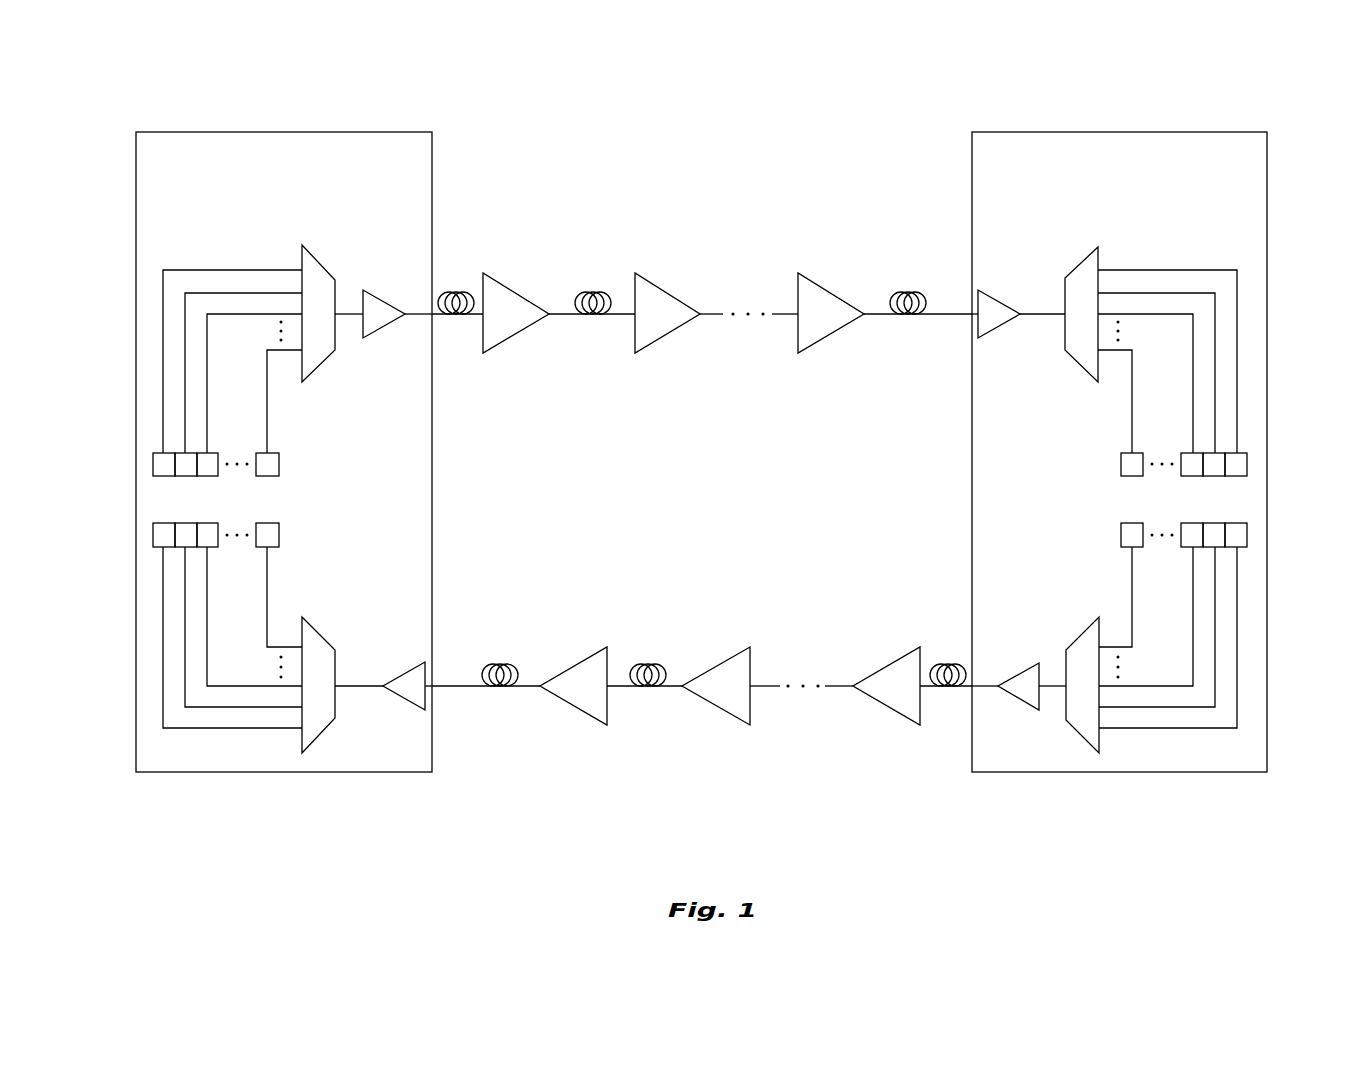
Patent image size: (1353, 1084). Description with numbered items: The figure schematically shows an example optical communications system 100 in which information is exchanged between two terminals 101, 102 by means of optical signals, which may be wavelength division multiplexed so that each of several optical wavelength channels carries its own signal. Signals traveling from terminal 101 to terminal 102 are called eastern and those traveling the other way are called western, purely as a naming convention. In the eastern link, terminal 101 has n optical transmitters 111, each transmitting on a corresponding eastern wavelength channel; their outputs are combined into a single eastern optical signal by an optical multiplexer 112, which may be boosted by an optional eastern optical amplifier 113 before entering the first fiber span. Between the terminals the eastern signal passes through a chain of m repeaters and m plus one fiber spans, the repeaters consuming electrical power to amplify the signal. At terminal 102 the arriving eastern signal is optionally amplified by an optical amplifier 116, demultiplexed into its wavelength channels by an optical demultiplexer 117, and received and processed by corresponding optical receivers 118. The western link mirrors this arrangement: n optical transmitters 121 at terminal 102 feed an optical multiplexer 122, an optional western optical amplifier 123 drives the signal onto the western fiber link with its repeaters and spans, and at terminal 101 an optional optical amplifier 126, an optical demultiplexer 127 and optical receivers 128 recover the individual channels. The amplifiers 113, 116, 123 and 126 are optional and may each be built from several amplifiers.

The optical communications system 100 is at (722, 97).
The terminal 101 is at (352, 167).
The terminal 102 is at (1184, 167).
The optical transmitters 111 is at (263, 450).
The optical multiplexer 112 is at (320, 262).
The eastern optical amplifier 113 is at (393, 300).
The optical amplifier 116 is at (1010, 297).
The optical demultiplexer 117 is at (1086, 258).
The optical receivers 118 is at (1140, 452).
The optical transmitters 121 is at (1128, 564).
The optical multiplexer 122 is at (1083, 633).
The western optical amplifier 123 is at (1015, 699).
The optical amplifier 126 is at (396, 700).
The optical demultiplexer 127 is at (321, 634).
The optical receivers 128 is at (253, 564).